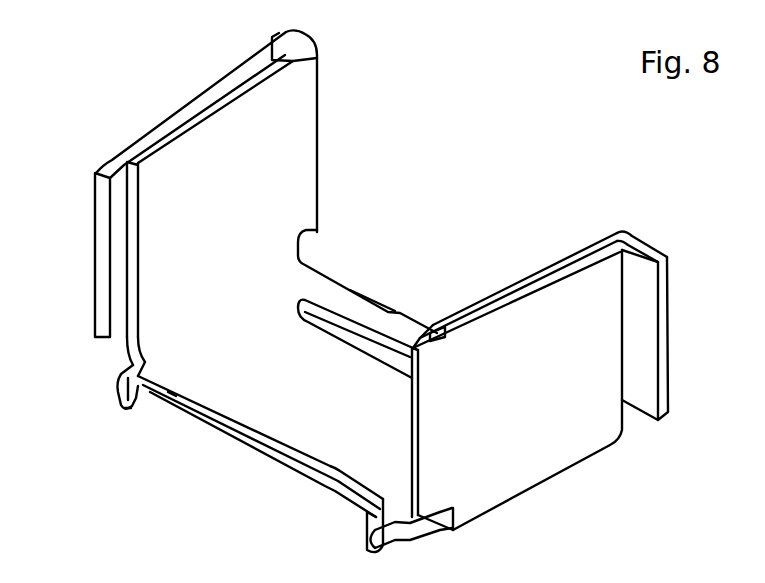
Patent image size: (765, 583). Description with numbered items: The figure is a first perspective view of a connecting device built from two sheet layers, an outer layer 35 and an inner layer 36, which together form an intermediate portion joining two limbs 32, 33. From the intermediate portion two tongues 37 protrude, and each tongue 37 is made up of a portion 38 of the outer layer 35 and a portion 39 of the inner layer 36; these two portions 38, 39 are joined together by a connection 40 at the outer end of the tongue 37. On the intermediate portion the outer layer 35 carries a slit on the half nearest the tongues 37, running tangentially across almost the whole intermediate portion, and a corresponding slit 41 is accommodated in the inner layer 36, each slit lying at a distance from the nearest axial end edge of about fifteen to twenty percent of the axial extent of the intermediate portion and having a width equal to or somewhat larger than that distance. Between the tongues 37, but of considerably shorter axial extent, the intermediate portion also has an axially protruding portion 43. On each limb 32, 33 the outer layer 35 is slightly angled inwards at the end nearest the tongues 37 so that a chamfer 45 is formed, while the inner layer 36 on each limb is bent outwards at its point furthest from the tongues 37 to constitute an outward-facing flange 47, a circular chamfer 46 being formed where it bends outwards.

The limb 32 is at (298, 152).
The limb 33 is at (532, 470).
The outer layer 35 is at (525, 295).
The inner layer 36 is at (443, 330).
The protruding tongue 37 is at (337, 554).
The portion of the outer layer 38 is at (131, 402).
The portion of the inner layer 39 is at (173, 397).
The connection 40 is at (118, 400).
The slit 41 is at (340, 320).
The axially protruding portion 43 is at (285, 455).
The chamfer 45 is at (102, 166).
The circular chamfer 46 is at (617, 232).
The outward-facing flange 47 is at (655, 245).